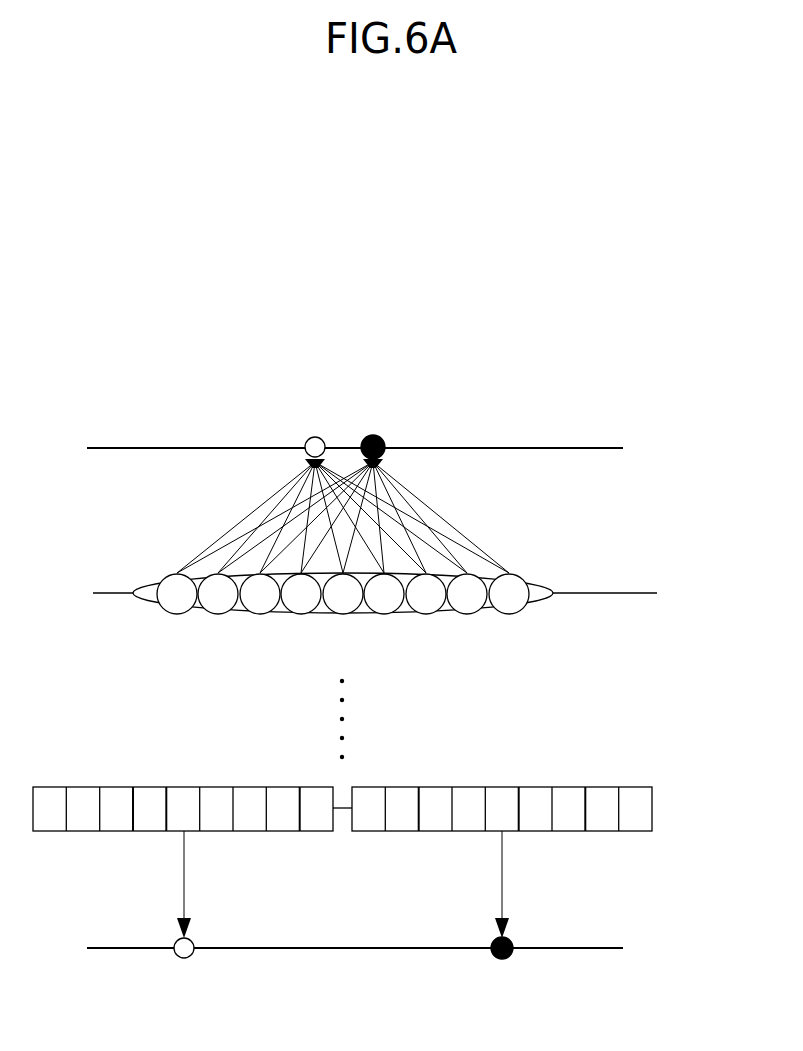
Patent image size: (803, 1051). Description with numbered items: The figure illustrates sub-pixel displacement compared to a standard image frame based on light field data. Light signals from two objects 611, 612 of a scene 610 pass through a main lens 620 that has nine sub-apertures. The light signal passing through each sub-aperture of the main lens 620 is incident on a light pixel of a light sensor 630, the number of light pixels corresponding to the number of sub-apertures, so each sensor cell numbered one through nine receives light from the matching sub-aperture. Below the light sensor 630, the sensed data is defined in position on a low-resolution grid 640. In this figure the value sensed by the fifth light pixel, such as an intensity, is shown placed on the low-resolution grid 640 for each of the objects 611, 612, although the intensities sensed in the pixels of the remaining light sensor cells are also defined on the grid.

The scene 610 is at (583, 450).
The object 611 is at (311, 444).
The object 612 is at (371, 437).
The main lens 620 is at (615, 595).
The light sensor 630 is at (652, 808).
The low-resolution grid 640 is at (572, 950).